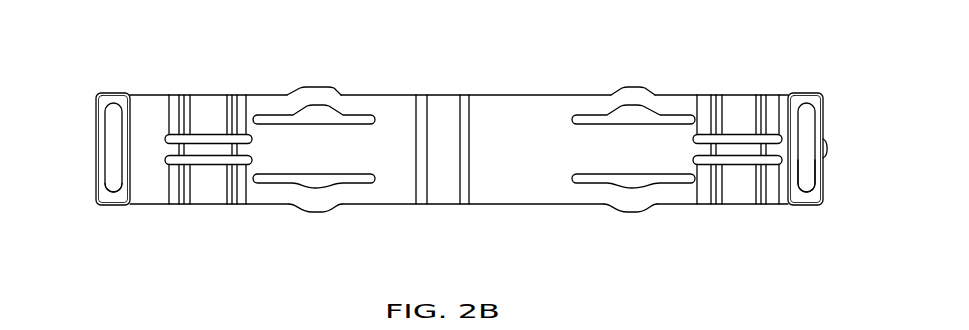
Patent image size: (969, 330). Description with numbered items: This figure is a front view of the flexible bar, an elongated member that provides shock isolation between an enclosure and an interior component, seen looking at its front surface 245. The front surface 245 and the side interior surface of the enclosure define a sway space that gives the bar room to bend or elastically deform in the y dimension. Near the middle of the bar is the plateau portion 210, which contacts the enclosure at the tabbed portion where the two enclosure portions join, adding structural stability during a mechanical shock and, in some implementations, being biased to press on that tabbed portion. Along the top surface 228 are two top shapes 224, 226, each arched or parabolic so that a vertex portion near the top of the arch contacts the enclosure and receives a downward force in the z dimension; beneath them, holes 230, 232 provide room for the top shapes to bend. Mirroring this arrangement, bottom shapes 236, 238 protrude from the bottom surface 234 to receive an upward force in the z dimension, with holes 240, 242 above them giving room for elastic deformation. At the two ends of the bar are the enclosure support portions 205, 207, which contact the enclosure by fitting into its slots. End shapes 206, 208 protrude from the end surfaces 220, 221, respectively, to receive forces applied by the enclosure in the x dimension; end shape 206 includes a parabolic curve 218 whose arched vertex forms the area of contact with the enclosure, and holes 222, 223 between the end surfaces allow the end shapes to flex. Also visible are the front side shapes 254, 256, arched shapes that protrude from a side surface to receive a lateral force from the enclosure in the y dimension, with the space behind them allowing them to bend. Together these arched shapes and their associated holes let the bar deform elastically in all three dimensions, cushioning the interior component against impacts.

The enclosure support portion 205 is at (808, 95).
The end shape 206 is at (822, 192).
The enclosure support portion 207 is at (118, 97).
The end shape 208 is at (102, 130).
The plateau portion 210 is at (441, 105).
The parabolic curve 218 is at (828, 148).
The end surface 220 is at (800, 167).
The end surface 221 is at (118, 187).
The hole 222 is at (807, 117).
The hole 223 is at (112, 170).
The top shape 224 is at (633, 87).
The top shape 226 is at (313, 87).
The top surface 228 is at (507, 92).
The hole 230 is at (683, 117).
The hole 232 is at (345, 117).
The bottom surface 234 is at (393, 205).
The bottom shape 236 is at (635, 212).
The bottom shape 238 is at (315, 212).
The hole 240 is at (616, 180).
The hole 242 is at (297, 180).
The front surface 245 is at (399, 160).
The front side shape 254 is at (732, 149).
The front side shape 256 is at (210, 148).